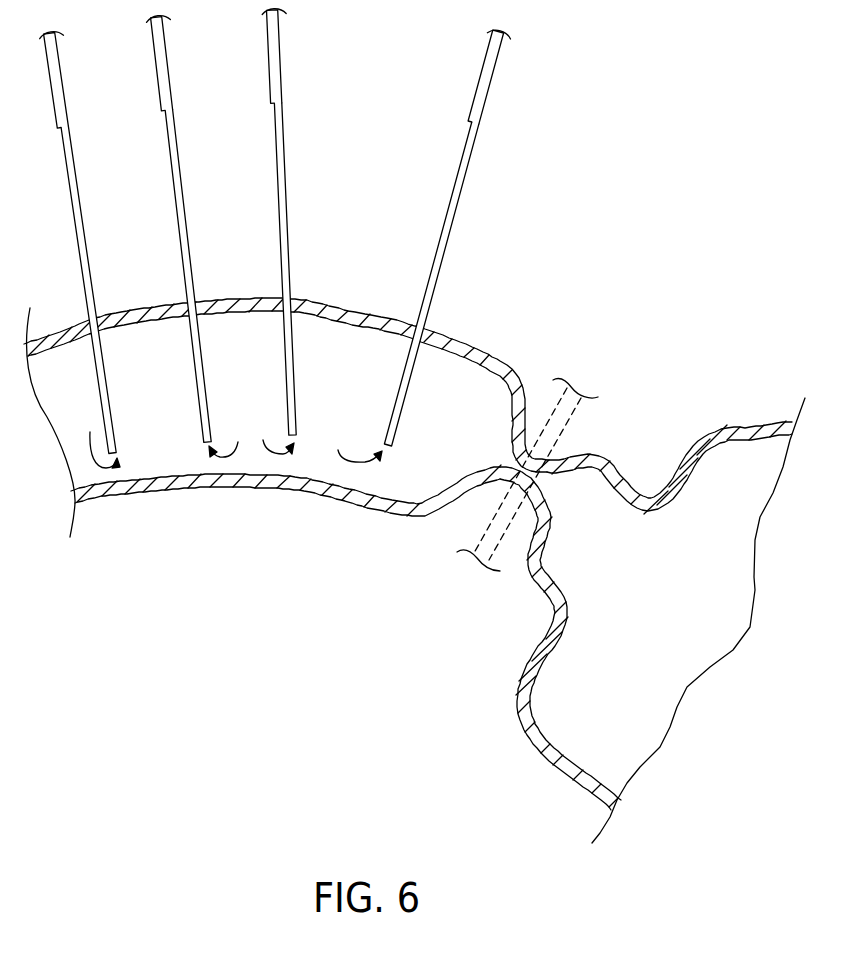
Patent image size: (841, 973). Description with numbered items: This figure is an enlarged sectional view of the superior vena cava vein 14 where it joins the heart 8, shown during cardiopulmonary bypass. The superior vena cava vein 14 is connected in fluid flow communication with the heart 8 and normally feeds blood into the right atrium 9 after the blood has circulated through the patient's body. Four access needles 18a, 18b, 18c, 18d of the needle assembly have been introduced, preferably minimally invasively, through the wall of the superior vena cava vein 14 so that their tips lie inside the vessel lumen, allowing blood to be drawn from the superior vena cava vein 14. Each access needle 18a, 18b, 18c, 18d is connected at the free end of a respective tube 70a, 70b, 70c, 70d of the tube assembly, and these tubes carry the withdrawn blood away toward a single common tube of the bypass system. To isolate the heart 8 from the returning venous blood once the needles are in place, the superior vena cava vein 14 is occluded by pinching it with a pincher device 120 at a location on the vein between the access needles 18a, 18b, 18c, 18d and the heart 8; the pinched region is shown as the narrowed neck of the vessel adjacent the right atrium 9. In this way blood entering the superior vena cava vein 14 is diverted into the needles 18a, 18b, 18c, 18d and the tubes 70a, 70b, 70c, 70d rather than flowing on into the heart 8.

The heart 8 is at (722, 696).
The right atrium 9 is at (528, 755).
The superior vena cava vein 14 is at (245, 489).
The access needle 18a is at (445, 250).
The access needle 18b is at (288, 240).
The access needle 18c is at (187, 228).
The access needle 18d is at (86, 242).
The tube 70a is at (491, 80).
The tube 70b is at (280, 57).
The tube 70c is at (168, 67).
The tube 70d is at (62, 85).
The pincher device 120 is at (584, 384).